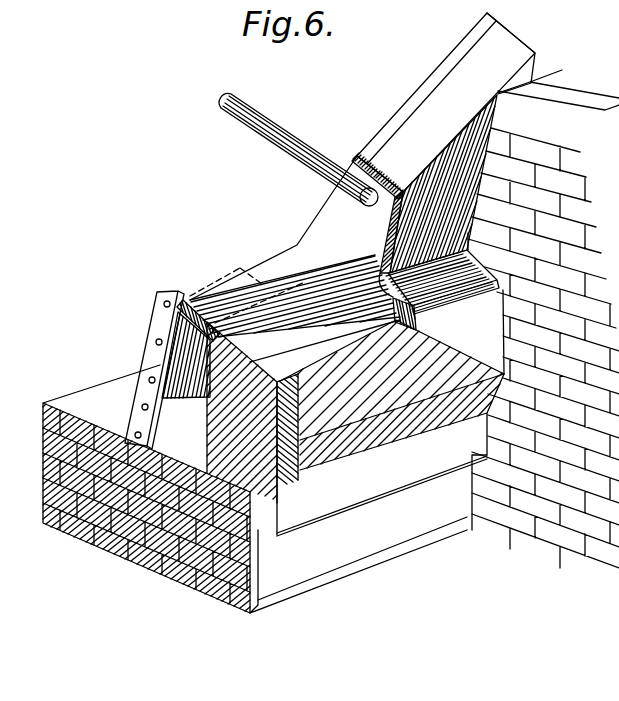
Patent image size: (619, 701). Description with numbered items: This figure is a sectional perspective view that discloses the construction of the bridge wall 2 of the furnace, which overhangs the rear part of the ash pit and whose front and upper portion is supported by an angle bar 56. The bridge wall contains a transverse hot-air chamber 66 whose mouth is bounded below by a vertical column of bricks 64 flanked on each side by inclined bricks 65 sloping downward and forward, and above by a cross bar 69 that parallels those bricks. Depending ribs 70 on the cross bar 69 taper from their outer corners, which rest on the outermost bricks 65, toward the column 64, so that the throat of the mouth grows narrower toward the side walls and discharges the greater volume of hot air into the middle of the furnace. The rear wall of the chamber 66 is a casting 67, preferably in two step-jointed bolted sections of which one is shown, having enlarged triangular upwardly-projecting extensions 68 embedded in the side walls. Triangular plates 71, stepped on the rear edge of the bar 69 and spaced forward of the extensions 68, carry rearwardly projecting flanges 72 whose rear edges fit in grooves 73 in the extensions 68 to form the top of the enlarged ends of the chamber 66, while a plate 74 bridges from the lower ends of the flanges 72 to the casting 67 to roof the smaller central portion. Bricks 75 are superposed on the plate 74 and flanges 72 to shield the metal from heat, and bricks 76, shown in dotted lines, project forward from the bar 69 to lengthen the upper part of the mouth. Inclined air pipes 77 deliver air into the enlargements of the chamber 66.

The bridge wall 2 is at (180, 572).
The angle bar 56 is at (265, 588).
The vertical column of bricks 64 is at (288, 470).
The inclined bricks 65 is at (371, 455).
The transverse hot-air chamber 66 is at (185, 403).
The casting 67 is at (160, 332).
The triangular upwardly-projecting extensions 68 is at (410, 100).
The cross bar 69 is at (470, 268).
The depending ribs 70 is at (430, 326).
The triangular plates 71 is at (462, 178).
The flanges 72 is at (498, 52).
The grooves 73 is at (355, 158).
The plate 74 is at (239, 298).
The bricks 75 is at (212, 322).
The bricks 76 is at (340, 381).
The air pipes 77 is at (247, 130).